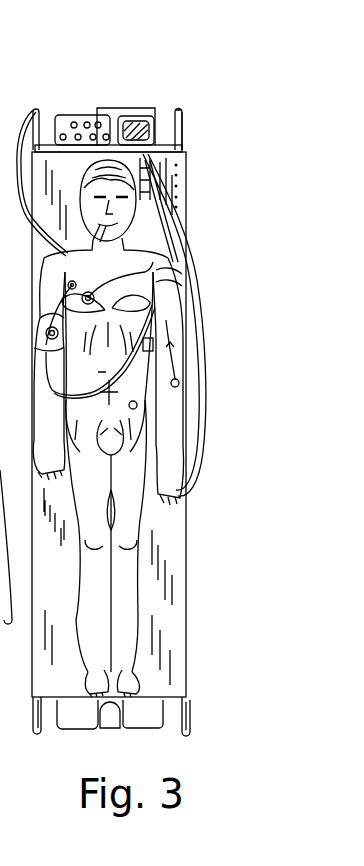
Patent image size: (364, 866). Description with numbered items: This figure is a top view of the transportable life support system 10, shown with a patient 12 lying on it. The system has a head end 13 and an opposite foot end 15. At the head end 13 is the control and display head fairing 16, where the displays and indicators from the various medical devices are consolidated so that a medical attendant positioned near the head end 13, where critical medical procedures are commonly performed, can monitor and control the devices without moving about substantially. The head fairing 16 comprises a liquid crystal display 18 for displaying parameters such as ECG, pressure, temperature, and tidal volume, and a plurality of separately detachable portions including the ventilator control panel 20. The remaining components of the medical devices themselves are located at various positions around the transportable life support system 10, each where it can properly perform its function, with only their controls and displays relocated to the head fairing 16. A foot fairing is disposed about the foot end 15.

The transportable life support system 10 is at (167, 538).
The patient 12 is at (130, 612).
The head end 13 is at (186, 165).
The foot end 15 is at (190, 650).
The control and display head fairing 16 is at (108, 92).
The liquid crystal display 18 is at (76, 120).
The ventilator control panel 20 is at (137, 130).